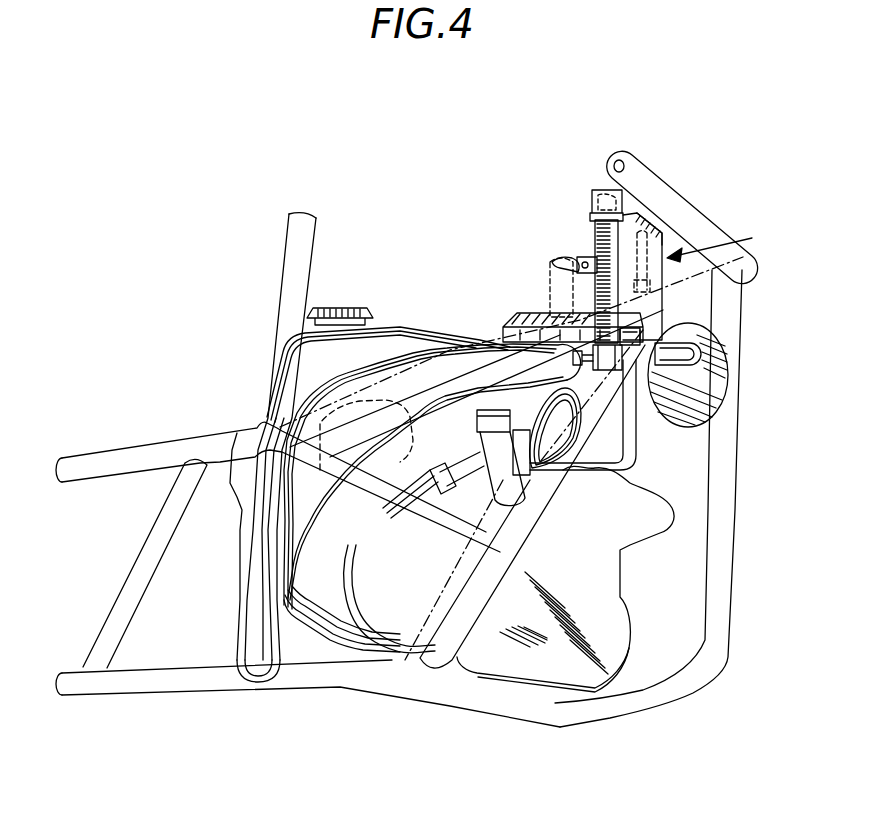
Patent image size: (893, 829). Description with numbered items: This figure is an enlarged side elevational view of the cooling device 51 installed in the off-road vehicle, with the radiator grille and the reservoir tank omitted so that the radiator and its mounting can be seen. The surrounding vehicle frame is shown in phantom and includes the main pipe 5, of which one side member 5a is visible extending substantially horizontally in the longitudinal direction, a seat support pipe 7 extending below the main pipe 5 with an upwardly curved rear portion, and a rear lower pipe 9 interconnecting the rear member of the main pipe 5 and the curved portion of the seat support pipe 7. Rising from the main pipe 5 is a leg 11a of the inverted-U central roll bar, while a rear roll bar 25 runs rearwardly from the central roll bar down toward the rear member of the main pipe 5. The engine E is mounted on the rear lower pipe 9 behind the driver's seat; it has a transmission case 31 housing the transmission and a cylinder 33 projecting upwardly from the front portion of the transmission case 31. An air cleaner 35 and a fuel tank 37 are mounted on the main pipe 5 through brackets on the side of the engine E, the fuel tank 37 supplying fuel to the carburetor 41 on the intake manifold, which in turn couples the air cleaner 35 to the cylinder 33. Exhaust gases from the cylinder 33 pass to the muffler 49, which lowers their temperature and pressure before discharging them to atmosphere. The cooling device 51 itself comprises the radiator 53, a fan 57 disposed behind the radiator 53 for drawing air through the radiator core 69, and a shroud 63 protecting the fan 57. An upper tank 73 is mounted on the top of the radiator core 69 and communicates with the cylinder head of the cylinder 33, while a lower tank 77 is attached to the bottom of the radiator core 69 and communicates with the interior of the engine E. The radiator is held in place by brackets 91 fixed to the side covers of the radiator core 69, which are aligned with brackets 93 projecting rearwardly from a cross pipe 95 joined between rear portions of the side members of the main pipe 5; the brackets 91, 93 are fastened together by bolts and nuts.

The main pipe 5 is at (133, 447).
The side member 5a is at (447, 352).
The seat support pipe 7 is at (187, 687).
The rear lower pipe 9 is at (640, 703).
The leg 11a is at (278, 262).
The rear roll bar 25 is at (648, 165).
The transmission case 31 is at (487, 650).
The cylinder 33 is at (262, 432).
The air cleaner 35 is at (528, 310).
The fuel tank 37 is at (385, 336).
The carburetor 41 is at (515, 495).
The muffler 49 is at (728, 372).
The cooling device 51 is at (762, 237).
The radiator 53 is at (605, 245).
The fan 57 is at (655, 222).
The shroud 63 is at (664, 236).
The radiator core 69 is at (645, 336).
The upper tank 73 is at (601, 189).
The lower tank 77 is at (603, 365).
The bracket 91 is at (588, 258).
The bracket 93 is at (562, 263).
The cross pipe 95 is at (558, 287).
The engine E is at (383, 607).